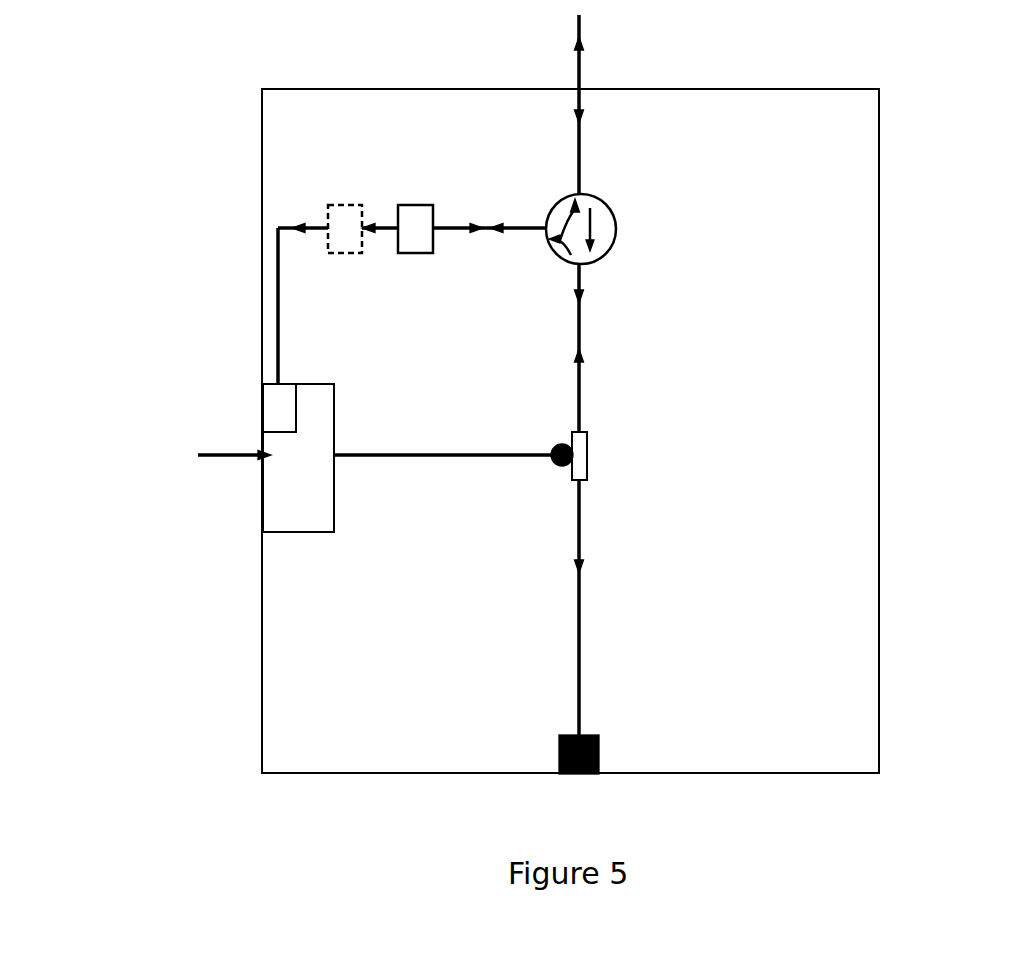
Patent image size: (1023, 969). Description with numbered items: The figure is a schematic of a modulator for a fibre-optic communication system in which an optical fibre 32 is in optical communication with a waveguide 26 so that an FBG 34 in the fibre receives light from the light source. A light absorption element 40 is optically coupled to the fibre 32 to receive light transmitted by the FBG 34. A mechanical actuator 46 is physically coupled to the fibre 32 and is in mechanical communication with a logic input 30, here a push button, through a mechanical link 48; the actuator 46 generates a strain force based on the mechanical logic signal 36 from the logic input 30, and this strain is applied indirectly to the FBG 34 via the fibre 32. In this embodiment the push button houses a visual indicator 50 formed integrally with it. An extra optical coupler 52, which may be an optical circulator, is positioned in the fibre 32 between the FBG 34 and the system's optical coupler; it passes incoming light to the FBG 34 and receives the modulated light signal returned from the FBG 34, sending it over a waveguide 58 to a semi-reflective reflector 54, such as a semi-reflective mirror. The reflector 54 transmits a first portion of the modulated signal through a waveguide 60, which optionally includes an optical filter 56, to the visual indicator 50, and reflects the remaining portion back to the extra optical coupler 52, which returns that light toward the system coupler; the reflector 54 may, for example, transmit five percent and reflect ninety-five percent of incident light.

The waveguide 26 is at (574, 50).
The logic input 30 is at (280, 538).
The optical fibre 32 is at (575, 362).
The FBG 34 is at (588, 446).
The logic signal 36 is at (205, 462).
The light absorption element 40 is at (600, 738).
The mechanical actuator 46 is at (550, 468).
The mechanical link 48 is at (410, 462).
The visual indicator 50 is at (262, 402).
The extra optical coupler 52 is at (618, 218).
The semi-reflective reflector 54 is at (412, 205).
The optical filter 56 is at (338, 205).
The waveguide 58 is at (500, 236).
The waveguide 60 is at (278, 312).